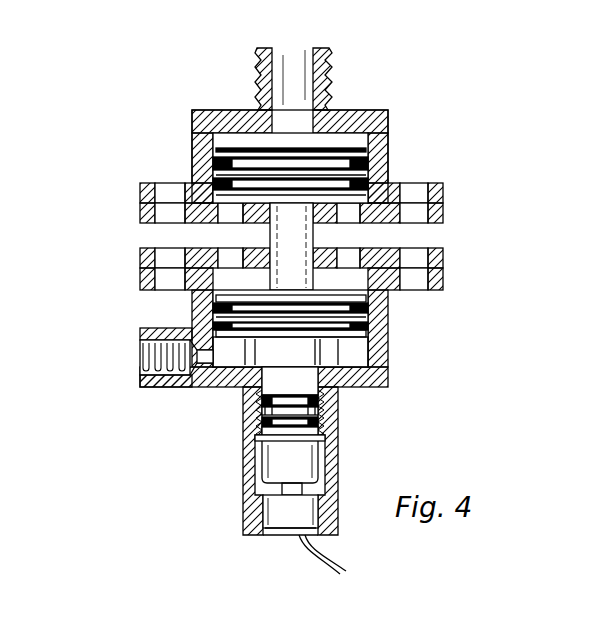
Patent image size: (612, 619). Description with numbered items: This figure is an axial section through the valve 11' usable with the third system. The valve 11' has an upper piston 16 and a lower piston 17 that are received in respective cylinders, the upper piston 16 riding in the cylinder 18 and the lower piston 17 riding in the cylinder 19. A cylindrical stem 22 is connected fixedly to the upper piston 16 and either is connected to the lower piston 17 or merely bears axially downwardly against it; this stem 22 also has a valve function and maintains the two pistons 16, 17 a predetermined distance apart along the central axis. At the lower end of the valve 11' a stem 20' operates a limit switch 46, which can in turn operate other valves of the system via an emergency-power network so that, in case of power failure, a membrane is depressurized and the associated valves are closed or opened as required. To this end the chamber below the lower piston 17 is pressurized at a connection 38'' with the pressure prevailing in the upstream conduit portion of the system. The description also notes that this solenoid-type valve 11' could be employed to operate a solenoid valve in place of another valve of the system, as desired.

The valve 11' is at (291, 297).
The upper piston 16 is at (367, 155).
The cylinder 18 is at (383, 174).
The cylindrical stem 22 is at (285, 237).
The cylinder 19 is at (378, 303).
The lower piston 17 is at (367, 330).
The connection 38'' is at (146, 369).
The stem 20' is at (247, 431).
The limit switch 46 is at (280, 505).